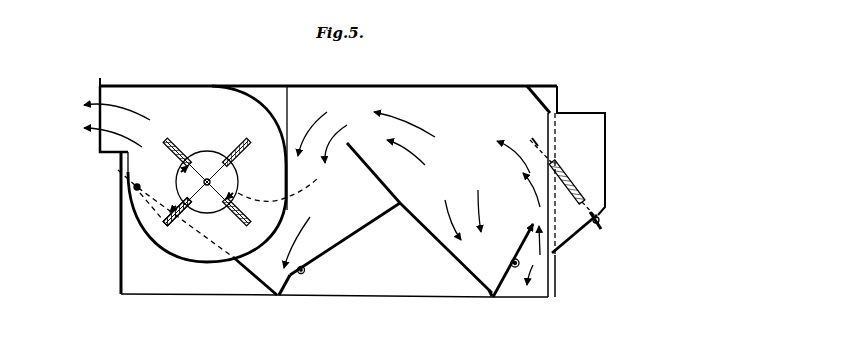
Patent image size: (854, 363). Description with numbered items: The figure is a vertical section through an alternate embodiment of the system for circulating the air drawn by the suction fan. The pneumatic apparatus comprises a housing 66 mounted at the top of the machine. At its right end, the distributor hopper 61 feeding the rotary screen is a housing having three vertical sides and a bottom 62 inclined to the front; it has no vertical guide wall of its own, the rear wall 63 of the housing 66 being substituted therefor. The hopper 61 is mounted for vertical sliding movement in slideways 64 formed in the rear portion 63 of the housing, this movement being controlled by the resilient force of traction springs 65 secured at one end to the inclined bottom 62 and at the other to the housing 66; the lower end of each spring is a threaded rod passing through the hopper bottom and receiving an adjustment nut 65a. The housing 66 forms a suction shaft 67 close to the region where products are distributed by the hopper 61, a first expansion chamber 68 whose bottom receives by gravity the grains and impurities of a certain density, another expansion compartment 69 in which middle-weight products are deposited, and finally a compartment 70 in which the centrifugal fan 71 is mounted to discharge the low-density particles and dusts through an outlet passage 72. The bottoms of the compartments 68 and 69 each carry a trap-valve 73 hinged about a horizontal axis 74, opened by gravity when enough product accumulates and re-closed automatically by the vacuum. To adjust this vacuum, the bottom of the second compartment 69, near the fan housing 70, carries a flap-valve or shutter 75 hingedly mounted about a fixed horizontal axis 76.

The hopper 61 is at (607, 180).
The inclined bottom 62 is at (578, 233).
The rear wall 63 is at (548, 124).
The slideways 64 is at (557, 284).
The traction springs 65 is at (563, 174).
The adjustment nut 65a is at (603, 221).
The housing 66 is at (298, 84).
The suction shaft 67 is at (540, 298).
The first expansion chamber 68 is at (510, 242).
The expansion compartment 69 is at (391, 218).
The fan compartment 70 is at (207, 171).
The centrifugal fan 71 is at (240, 214).
The outlet passage 72 is at (103, 138).
The trap-valve 73 is at (288, 282).
The horizontal axis 74 is at (305, 271).
The flap-valve 75 is at (127, 218).
The fixed horizontal axis 76 is at (139, 185).